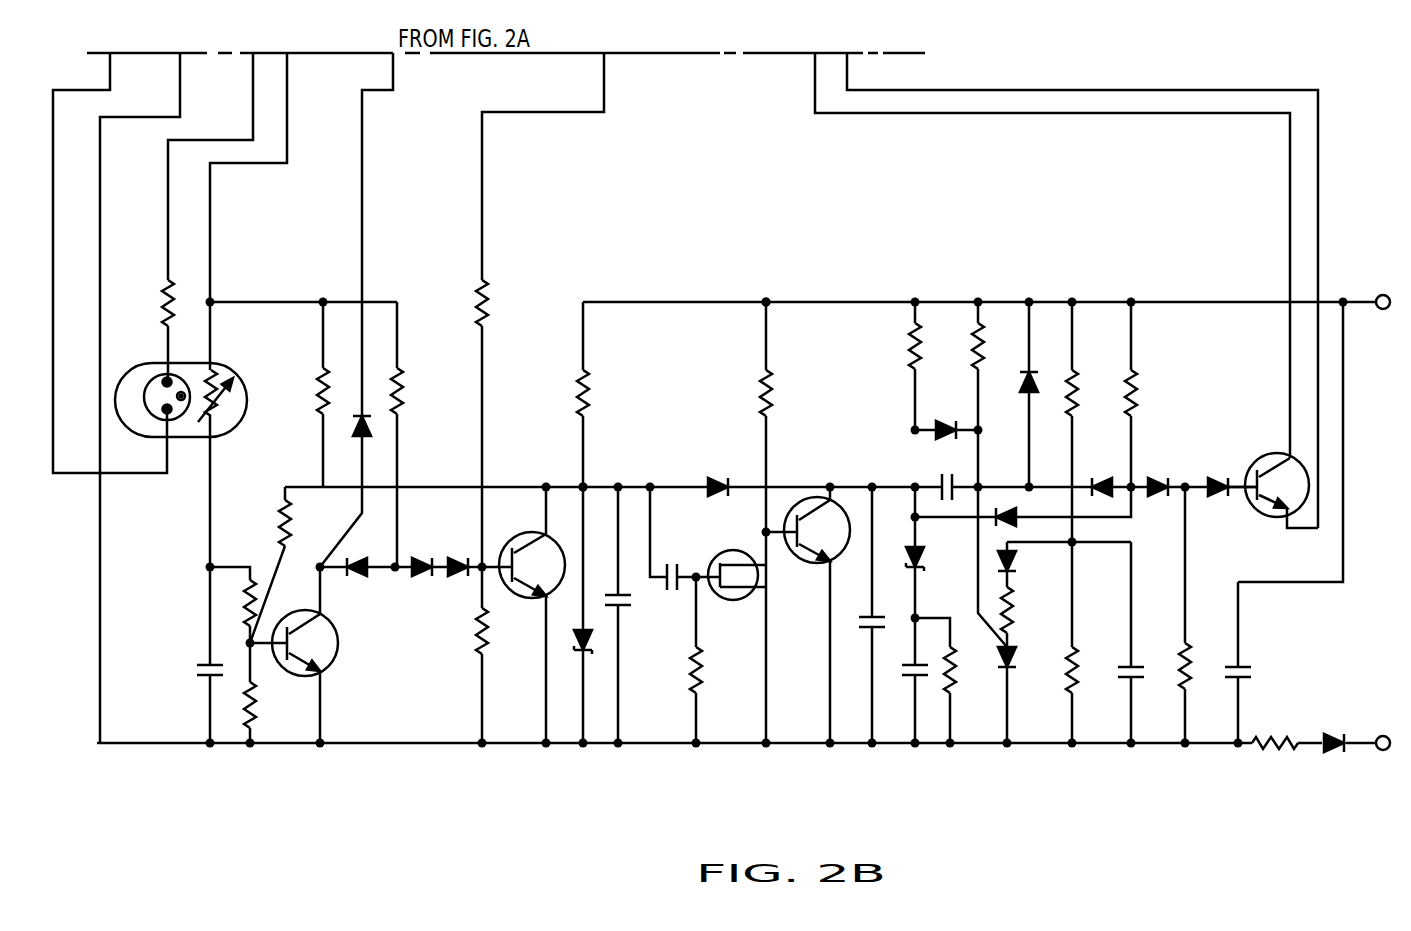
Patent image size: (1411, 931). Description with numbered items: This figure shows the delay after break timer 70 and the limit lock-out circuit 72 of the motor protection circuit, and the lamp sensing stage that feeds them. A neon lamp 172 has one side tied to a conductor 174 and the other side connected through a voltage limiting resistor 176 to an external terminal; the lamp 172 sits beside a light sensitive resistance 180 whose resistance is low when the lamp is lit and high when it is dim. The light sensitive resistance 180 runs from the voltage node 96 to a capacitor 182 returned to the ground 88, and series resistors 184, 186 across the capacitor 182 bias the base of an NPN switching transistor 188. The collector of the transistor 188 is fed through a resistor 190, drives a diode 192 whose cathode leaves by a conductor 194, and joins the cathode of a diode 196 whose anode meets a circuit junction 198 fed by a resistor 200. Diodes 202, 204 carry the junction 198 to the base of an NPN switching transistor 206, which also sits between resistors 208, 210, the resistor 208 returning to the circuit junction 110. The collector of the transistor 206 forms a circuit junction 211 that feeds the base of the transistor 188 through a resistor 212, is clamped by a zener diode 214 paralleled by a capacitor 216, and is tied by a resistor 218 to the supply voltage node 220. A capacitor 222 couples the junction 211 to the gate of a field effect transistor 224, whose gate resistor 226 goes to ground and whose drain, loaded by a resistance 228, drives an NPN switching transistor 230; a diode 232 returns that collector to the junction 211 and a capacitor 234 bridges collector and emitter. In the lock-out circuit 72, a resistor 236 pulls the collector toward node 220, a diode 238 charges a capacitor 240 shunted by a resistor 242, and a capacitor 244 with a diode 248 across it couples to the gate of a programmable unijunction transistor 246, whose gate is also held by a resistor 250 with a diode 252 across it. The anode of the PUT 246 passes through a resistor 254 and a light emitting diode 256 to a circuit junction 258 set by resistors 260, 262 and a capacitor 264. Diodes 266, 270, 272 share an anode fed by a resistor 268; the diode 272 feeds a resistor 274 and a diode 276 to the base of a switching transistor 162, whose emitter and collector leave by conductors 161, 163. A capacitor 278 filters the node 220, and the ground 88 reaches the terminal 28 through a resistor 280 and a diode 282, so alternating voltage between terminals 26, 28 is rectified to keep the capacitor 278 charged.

The terminal 26 is at (1382, 295).
The terminal 28 is at (1382, 751).
The delay after break timer 70 is at (660, 766).
The limit lock-out circuit 72 is at (1246, 765).
The ground 88 is at (213, 747).
The voltage node 96 is at (214, 299).
The circuit junction 110 is at (612, 72).
The conductor 161 is at (848, 77).
The switching transistor 162 is at (1248, 505).
The conductor 163 is at (815, 77).
The neon lamp 172 is at (162, 412).
The conductor 174 is at (112, 77).
The voltage limiting resistor 176 is at (166, 290).
The light sensitive resistance 180 is at (221, 373).
The capacitor 182 is at (195, 670).
The resistor 184 is at (252, 578).
The resistor 186 is at (252, 704).
The NPN switching transistor 188 is at (327, 621).
The resistor 190 is at (317, 402).
The diode 192 is at (366, 433).
The conductor 194 is at (395, 77).
The diode 196 is at (365, 574).
The circuit junction 198 is at (395, 530).
The resistor 200 is at (400, 380).
The diode 202 is at (420, 560).
The diode 204 is at (462, 574).
The NPN switching transistor 206 is at (517, 539).
The resistor 208 is at (485, 286).
The resistor 210 is at (484, 622).
The circuit junction 211 is at (583, 485).
The resistor 212 is at (280, 538).
The zener diode 214 is at (576, 637).
The capacitor 216 is at (630, 598).
The resistor 218 is at (586, 400).
The supply voltage node 220 is at (768, 299).
The capacitor 222 is at (667, 571).
The field effect transistor 224 is at (723, 595).
The resistor 226 is at (700, 661).
The resistance 228 is at (770, 378).
The NPN switching transistor 230 is at (798, 558).
The diode 232 is at (716, 477).
The capacitor 234 is at (880, 619).
The resistor 236 is at (910, 361).
The diode 238 is at (926, 559).
The capacitor 240 is at (905, 668).
The resistor 242 is at (960, 673).
The capacitor 244 is at (950, 478).
The programmable unijunction transistor 246 is at (1020, 672).
The diode 248 is at (951, 421).
The resistor 250 is at (985, 328).
The diode 252 is at (1034, 379).
The resistor 254 is at (1017, 610).
The light emitting diode 256 is at (1017, 565).
The circuit junction 258 is at (1147, 553).
The resistor 260 is at (1077, 396).
The resistor 262 is at (1076, 670).
The capacitor 264 is at (1142, 677).
The diode 266 is at (1106, 478).
The resistor 268 is at (1137, 402).
The diode 270 is at (1010, 505).
The diode 272 is at (1162, 478).
The resistor 274 is at (1192, 678).
The diode 276 is at (1215, 478).
The capacitor 278 is at (1248, 678).
The resistor 280 is at (1292, 749).
The diode 282 is at (1331, 737).